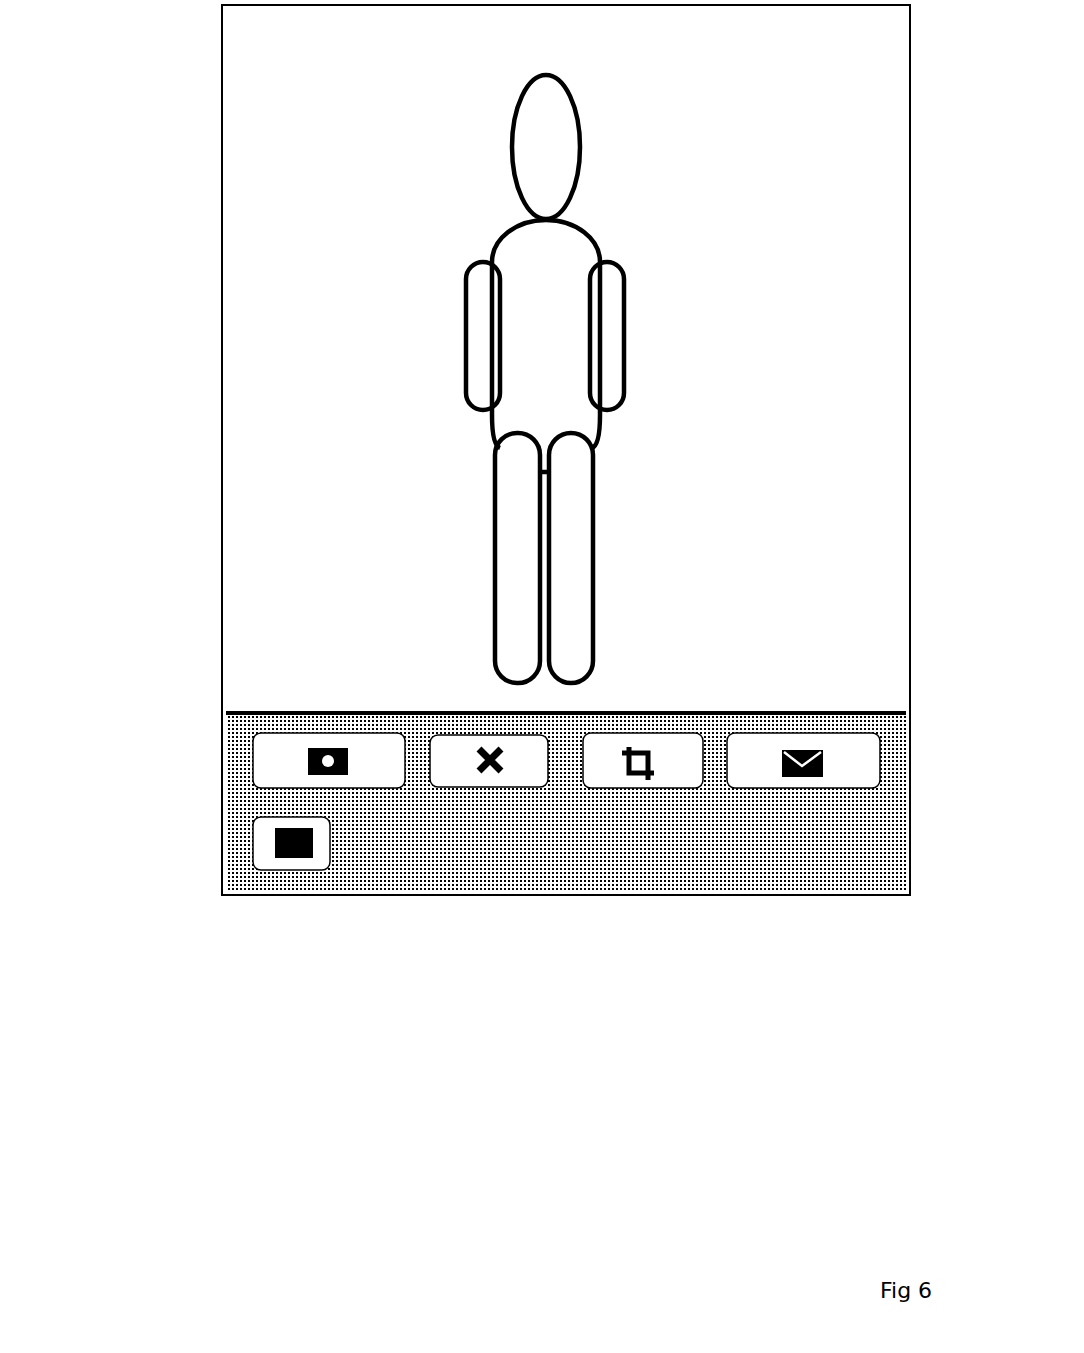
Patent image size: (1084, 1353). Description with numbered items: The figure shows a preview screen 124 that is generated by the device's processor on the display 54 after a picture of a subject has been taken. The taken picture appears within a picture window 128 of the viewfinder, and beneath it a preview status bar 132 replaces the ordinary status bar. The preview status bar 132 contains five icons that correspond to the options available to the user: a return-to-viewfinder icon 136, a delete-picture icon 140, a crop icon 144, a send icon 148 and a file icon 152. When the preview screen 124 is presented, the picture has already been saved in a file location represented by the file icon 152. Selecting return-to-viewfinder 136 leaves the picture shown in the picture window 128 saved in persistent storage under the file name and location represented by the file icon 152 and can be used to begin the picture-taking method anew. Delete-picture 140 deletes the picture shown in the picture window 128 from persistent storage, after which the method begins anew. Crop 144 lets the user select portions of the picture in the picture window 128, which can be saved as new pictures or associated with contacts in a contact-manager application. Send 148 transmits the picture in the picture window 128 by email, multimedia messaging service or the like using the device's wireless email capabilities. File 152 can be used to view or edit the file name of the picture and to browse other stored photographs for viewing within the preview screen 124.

The preview screen 124 is at (477, 595).
The display 54 is at (217, 633).
The picture window 128 is at (318, 457).
The preview status bar 132 is at (483, 882).
The return-to-viewfinder icon 136 is at (389, 765).
The delete-picture icon 140 is at (532, 760).
The crop icon 144 is at (675, 760).
The send icon 148 is at (845, 762).
The file icon 152 is at (273, 830).